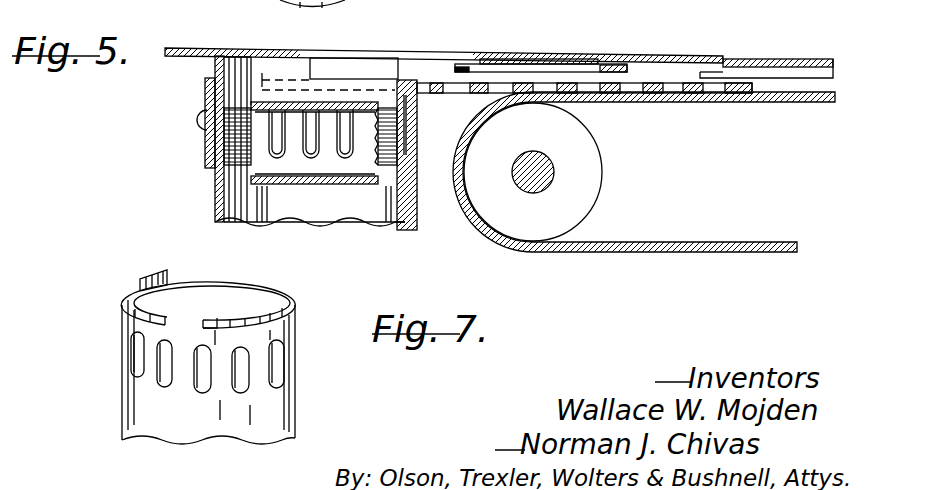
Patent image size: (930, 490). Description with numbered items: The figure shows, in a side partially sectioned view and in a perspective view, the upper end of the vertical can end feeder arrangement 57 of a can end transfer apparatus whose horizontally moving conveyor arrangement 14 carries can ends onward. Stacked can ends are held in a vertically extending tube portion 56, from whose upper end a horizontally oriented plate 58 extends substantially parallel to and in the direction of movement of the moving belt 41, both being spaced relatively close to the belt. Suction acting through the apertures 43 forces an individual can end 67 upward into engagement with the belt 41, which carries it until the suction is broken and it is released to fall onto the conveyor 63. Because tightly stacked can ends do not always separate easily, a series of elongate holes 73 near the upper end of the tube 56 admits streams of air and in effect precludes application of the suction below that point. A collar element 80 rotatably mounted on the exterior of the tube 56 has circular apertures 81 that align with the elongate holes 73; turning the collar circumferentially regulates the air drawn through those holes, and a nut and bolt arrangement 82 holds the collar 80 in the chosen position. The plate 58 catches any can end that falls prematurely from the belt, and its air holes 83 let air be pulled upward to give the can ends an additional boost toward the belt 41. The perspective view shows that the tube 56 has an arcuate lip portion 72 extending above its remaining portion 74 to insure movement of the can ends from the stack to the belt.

In FIG. 5, the conveyor arrangement 14 is at (692, 255).
In FIG. 5, the belt 41 is at (650, 56).
In FIG. 5, the apertures 43 is at (500, 63).
In FIG. 5, the tube portion 56 is at (401, 200).
In FIG. 7, the tube portion 56 is at (122, 397).
In FIG. 5, the vertical can end feeder arrangement 57 is at (202, 166).
In FIG. 5, the plate 58 is at (746, 94).
In FIG. 5, the conveyor 63 is at (499, 245).
In FIG. 5, the can end 67 is at (562, 62).
In FIG. 5, the arcuate lip portion 72 is at (214, 68).
In FIG. 7, the arcuate lip portion 72 is at (136, 275).
In FIG. 5, the elongate holes 73 is at (380, 157).
In FIG. 7, the elongate holes 73 is at (237, 391).
In FIG. 7, the remaining portion 74 is at (288, 298).
In FIG. 5, the collar element 80 is at (419, 106).
In FIG. 5, the circular apertures 81 is at (418, 130).
In FIG. 5, the nut and bolt arrangement 82 is at (200, 122).
In FIG. 5, the holes 83 is at (702, 94).